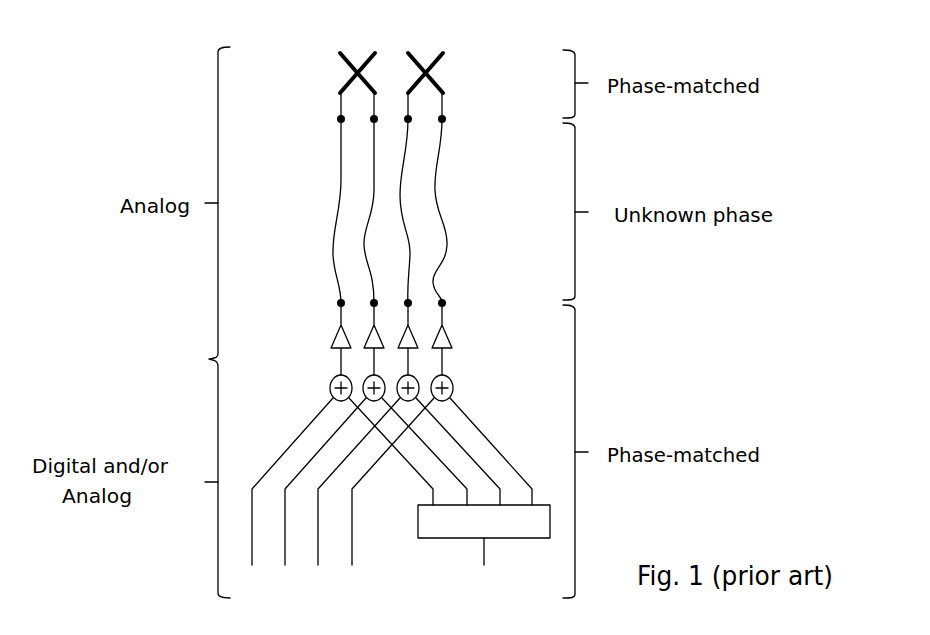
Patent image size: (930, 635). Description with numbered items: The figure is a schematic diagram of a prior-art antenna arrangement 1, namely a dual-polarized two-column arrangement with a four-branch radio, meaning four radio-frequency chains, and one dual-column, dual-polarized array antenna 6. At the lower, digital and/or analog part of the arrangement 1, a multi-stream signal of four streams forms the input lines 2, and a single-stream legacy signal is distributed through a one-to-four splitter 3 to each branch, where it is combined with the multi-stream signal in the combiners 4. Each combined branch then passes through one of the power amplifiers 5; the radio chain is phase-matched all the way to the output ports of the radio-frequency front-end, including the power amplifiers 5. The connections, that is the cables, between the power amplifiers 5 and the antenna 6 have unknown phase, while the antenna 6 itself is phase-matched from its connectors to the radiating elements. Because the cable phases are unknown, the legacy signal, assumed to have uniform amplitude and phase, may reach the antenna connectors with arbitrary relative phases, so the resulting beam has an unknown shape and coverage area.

The antenna arrangement 1 is at (152, 54).
The digital/analog input signals a1-a4 2 is at (352, 556).
The 1:4 power splitter 3 is at (484, 555).
The combiners 4 is at (330, 387).
The power amplifiers 5 is at (335, 331).
The antenna 6 is at (340, 86).